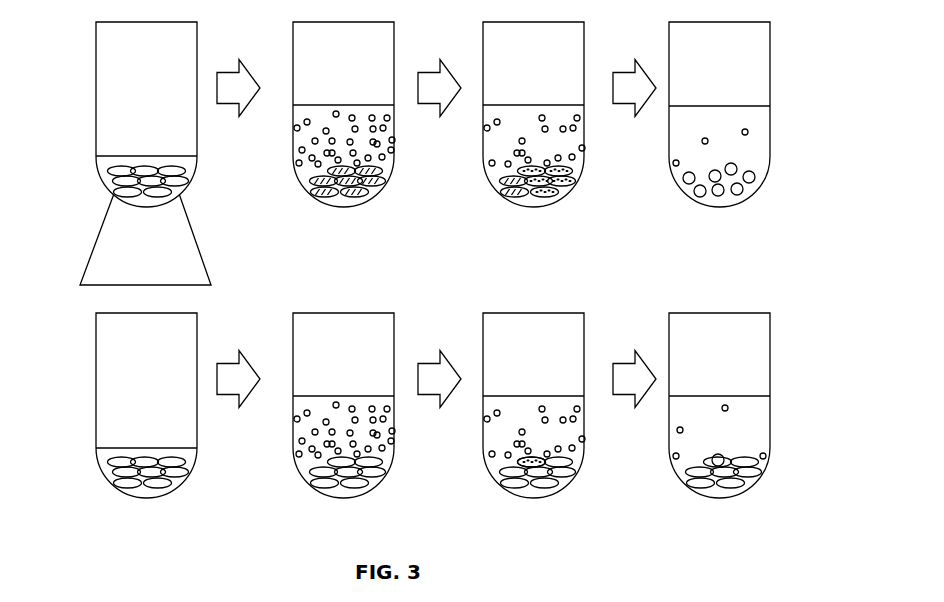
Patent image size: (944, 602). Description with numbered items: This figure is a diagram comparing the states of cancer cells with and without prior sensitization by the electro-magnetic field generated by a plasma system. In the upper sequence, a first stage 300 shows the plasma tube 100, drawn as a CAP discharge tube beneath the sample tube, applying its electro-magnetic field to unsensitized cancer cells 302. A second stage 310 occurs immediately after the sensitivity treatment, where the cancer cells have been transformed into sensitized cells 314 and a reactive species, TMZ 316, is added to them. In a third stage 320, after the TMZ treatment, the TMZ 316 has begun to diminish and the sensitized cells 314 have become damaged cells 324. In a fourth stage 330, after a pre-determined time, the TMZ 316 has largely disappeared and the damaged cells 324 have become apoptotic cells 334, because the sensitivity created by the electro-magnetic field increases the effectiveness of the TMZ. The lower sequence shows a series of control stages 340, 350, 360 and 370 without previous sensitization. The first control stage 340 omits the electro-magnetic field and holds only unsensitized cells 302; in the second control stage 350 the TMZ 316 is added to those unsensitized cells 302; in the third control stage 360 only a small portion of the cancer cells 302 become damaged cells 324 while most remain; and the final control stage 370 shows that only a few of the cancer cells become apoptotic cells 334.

The plasma tube 100 is at (100, 228).
The first stage 300 is at (96, 37).
The unsensitized cancer cells 302 is at (108, 174).
The second stage 310 is at (293, 37).
The sensitized cells 314 is at (306, 183).
The TMZ 316 is at (313, 141).
The third stage 320 is at (483, 37).
The damaged cells 324 is at (560, 188).
The fourth stage 330 is at (669, 37).
The apoptotic cells 334 is at (683, 178).
The first control stage 340 is at (96, 333).
The second control stage 350 is at (293, 333).
The third control stage 360 is at (483, 333).
The final control stage 370 is at (669, 333).